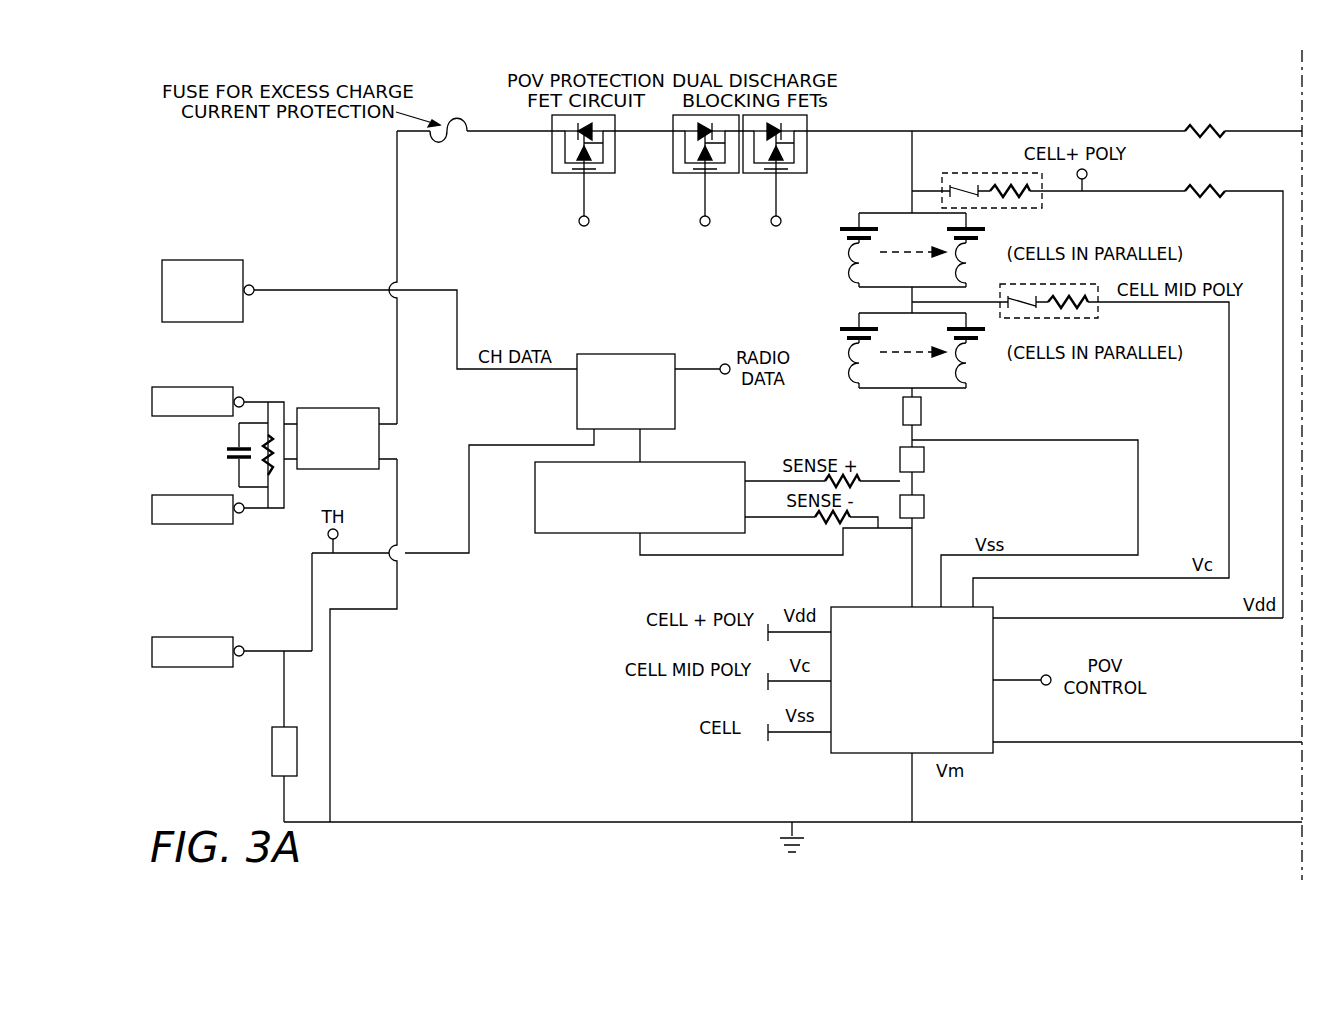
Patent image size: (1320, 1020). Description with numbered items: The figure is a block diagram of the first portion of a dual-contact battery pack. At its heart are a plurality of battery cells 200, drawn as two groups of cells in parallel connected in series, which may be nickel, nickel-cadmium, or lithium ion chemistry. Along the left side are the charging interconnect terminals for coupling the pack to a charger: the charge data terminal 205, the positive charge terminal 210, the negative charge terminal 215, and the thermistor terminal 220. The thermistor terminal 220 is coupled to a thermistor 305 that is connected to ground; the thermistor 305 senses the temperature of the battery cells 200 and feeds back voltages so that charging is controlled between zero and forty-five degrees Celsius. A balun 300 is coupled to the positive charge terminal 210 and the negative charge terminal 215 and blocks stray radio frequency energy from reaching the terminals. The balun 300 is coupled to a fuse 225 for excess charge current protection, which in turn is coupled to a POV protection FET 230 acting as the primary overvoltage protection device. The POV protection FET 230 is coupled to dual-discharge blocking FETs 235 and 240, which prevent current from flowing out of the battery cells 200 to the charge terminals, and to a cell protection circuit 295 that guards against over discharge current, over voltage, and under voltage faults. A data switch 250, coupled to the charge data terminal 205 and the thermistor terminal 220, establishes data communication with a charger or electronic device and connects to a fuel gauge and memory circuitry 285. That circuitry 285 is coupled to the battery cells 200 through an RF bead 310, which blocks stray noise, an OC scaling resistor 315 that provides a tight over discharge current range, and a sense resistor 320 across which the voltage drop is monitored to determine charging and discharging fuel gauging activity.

The plurality of battery cells 200 is at (808, 218).
The charge data terminal 205 is at (203, 257).
The positive charge terminal 210 is at (190, 385).
The negative charge terminal 215 is at (190, 492).
The thermistor terminal 220 is at (190, 635).
The fuse 225 is at (440, 141).
The POV protection FET 230 is at (552, 163).
The discharge blocking FET 235 is at (673, 163).
The discharge blocking FET 240 is at (807, 153).
The data switch 250 is at (676, 408).
The fuel gauge and memory circuitry 285 is at (535, 522).
The cell protection circuit 295 is at (860, 606).
The balun 300 is at (370, 470).
The thermistor 305 is at (272, 774).
The RF bead 310 is at (903, 413).
The OC scaling resistor 315 is at (925, 455).
The sense resistor 320 is at (925, 502).